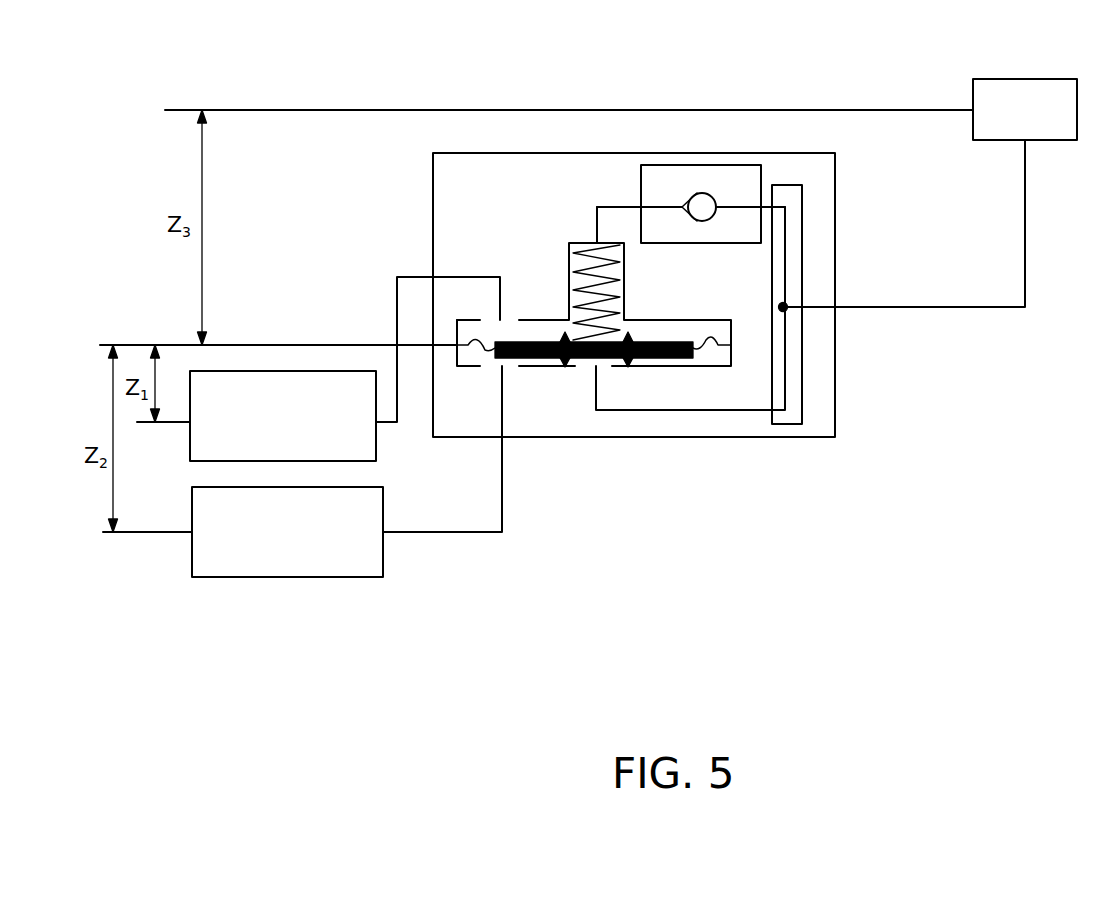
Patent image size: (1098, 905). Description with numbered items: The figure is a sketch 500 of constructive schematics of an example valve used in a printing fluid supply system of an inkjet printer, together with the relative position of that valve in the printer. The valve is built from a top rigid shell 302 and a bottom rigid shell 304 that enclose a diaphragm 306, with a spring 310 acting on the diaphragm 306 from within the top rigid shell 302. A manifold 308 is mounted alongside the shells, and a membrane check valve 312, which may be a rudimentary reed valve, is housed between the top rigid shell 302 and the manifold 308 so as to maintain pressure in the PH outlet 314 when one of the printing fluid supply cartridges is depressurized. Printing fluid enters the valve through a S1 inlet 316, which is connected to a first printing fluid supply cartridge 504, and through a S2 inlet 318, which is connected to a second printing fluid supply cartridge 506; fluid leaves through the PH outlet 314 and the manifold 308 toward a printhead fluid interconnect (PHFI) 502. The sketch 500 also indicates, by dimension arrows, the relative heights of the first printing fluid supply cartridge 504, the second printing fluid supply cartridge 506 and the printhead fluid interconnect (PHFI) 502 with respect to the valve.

The top rigid shell 302 is at (546, 307).
The bottom rigid shell 304 is at (542, 387).
The diaphragm 306 is at (678, 380).
The manifold 308 is at (815, 259).
The spring 310 is at (588, 278).
The membrane check valve 312 is at (701, 180).
The PH outlet 314 is at (797, 320).
The S1 inlet 316 is at (484, 311).
The S2 inlet 318 is at (497, 383).
The sketch 500 is at (773, 657).
The printhead fluid interconnect (PHFI) 502 is at (930, 193).
The first printing fluid supply cartridge 504 is at (283, 416).
The second printing fluid supply cartridge 506 is at (287, 532).